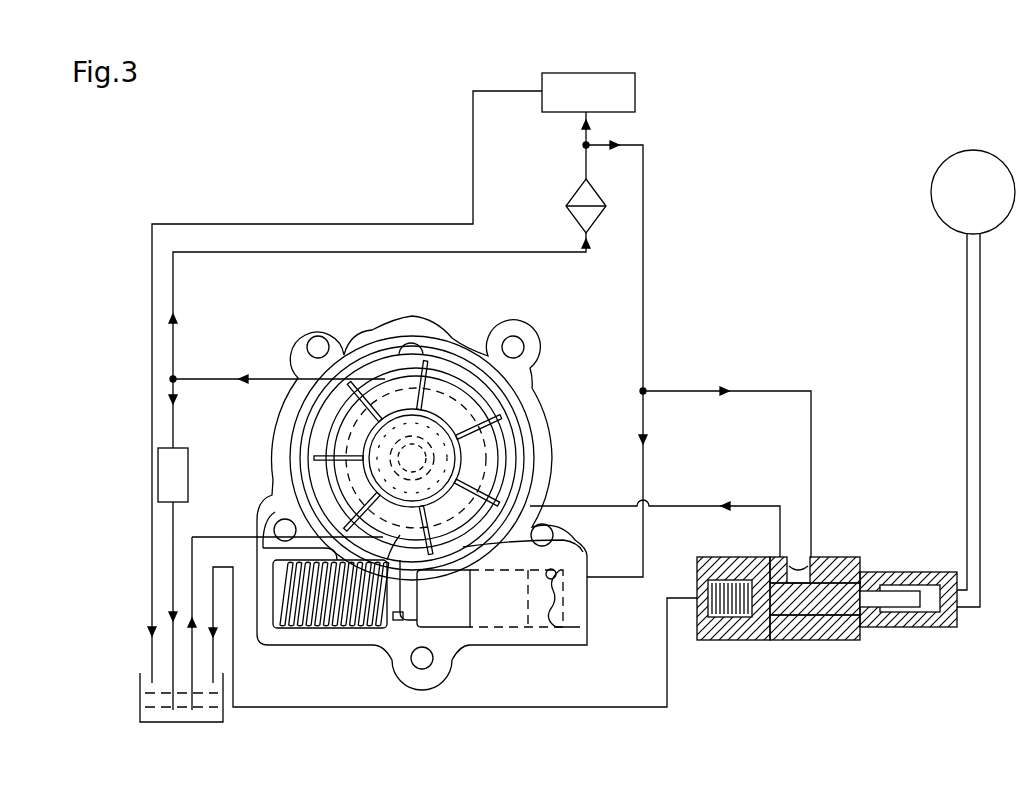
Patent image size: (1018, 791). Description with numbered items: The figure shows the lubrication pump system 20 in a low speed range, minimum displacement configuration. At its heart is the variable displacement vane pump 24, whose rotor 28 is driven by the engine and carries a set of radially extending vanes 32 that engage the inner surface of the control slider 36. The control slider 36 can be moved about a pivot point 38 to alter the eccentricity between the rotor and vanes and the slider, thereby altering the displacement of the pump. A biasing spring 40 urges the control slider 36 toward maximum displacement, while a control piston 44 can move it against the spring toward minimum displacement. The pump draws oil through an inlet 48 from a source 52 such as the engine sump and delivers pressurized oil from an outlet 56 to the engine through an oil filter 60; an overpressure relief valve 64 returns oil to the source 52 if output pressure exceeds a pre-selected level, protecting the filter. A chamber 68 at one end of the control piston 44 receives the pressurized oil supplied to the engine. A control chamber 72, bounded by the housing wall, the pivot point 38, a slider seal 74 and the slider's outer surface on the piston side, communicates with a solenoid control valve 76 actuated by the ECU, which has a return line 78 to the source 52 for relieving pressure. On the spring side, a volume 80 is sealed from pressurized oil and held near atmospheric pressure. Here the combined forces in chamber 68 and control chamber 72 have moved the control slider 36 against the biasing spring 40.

The lubrication pump system 20 is at (249, 172).
The variable displacement vane pump 24 is at (547, 410).
The rotor 28 is at (408, 402).
The vanes 32 is at (500, 432).
The control slider 36 is at (310, 428).
The pivot point 38 is at (415, 345).
The biasing spring 40 is at (330, 615).
The control piston 44 is at (493, 618).
The inlet 48 is at (300, 505).
The source of lubricating oil 52 is at (223, 712).
The outlet 56 is at (402, 378).
The oil filter 60 is at (573, 205).
The overpressure relief valve 64 is at (188, 472).
The chamber 68 is at (545, 618).
The control chamber 72 is at (508, 400).
The slider seal 74 is at (398, 622).
The control valve 76 is at (845, 557).
The return line 78 is at (456, 637).
The volume 80 is at (302, 492).